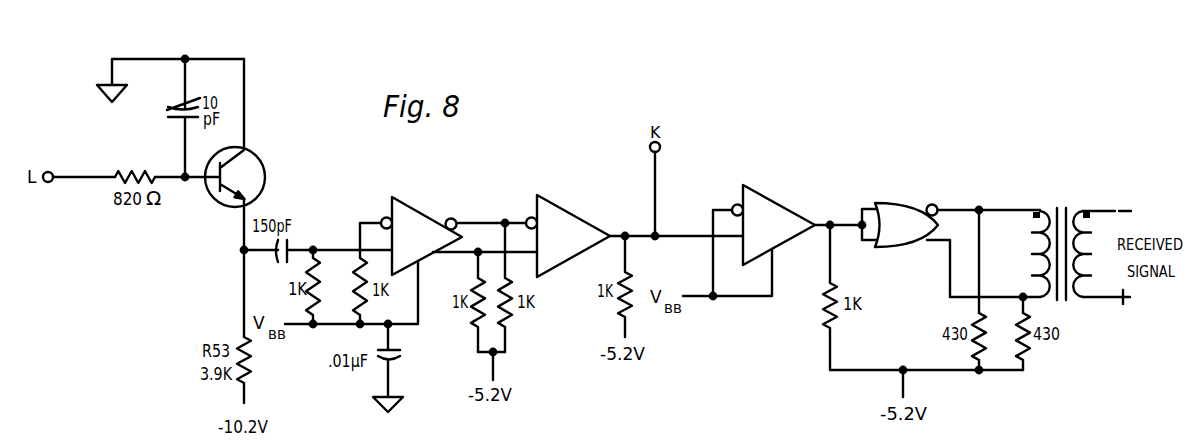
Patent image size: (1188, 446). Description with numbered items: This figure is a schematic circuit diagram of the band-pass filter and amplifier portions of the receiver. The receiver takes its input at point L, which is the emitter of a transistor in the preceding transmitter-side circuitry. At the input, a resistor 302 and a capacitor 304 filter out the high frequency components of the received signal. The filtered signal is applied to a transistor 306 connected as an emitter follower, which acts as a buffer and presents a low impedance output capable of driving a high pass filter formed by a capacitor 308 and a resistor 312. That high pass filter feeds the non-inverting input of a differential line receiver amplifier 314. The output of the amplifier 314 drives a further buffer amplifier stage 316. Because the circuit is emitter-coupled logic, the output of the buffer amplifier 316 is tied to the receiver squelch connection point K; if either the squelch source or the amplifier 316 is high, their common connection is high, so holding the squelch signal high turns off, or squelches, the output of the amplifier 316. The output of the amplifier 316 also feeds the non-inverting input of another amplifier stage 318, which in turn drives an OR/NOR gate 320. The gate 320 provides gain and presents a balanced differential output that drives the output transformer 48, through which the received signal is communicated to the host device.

The resistor 302 is at (132, 170).
The capacitor 304 is at (170, 108).
The transistor 306 is at (263, 165).
The capacitor 308 is at (277, 260).
The resistor 312 is at (320, 283).
The differential line receiver amplifier 314 is at (418, 210).
The buffer amplifier stage 316 is at (565, 207).
The amplifier stage 318 is at (781, 206).
The OR/NOR gate 320 is at (895, 203).
The output transformer 48 is at (1058, 204).